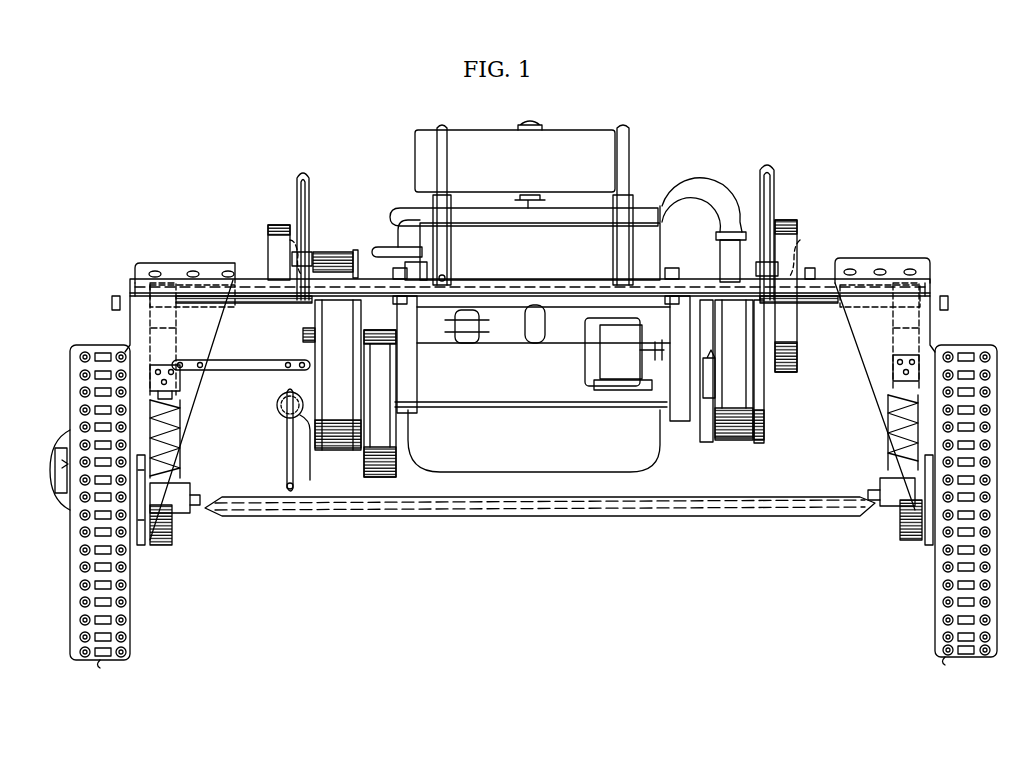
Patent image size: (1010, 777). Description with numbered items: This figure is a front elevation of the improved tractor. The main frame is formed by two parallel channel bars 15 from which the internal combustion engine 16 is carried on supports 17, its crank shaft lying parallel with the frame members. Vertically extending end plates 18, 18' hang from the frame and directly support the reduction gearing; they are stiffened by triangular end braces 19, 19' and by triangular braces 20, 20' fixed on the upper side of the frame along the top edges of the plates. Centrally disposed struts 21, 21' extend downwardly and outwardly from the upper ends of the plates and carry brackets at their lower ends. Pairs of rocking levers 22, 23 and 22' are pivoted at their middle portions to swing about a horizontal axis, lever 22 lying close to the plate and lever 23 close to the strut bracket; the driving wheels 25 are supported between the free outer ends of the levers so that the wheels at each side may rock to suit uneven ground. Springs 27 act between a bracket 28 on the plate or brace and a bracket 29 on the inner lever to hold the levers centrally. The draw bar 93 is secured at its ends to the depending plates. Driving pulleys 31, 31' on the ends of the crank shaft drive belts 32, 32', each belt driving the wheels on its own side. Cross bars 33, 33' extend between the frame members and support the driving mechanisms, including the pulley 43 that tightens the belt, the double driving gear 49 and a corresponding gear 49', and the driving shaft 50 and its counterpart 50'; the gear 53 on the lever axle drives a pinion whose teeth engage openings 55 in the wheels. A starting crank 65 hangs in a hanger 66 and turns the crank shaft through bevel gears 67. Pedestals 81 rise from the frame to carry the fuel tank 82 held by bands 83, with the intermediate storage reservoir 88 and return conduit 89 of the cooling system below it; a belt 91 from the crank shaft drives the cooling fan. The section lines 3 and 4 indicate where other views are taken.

The section line 3- 3 is at (337, 138).
The section line 4- 4 is at (360, 80).
The channel bars 15 is at (545, 280).
The internal combustion engine 16 is at (532, 388).
The supports 17 is at (420, 370).
The end plate 18 is at (173, 339).
The end plate 18' is at (892, 336).
The front end brace 19 is at (191, 410).
The rear end brace 19' is at (875, 396).
The triangular brace 20 is at (185, 270).
The triangular brace 20' is at (882, 269).
The strut 21 is at (81, 396).
The strut 21' is at (956, 317).
The lever 22 is at (159, 518).
The lever 22' is at (900, 459).
The lever 23 is at (68, 500).
The driving wheel 25 is at (72, 602).
The spring 27 is at (182, 442).
The bracket 28 is at (178, 396).
The bracket 29 is at (192, 480).
The driving pulley 31 is at (332, 388).
The driving pulley 31' is at (782, 374).
The belt 32 is at (367, 392).
The belt 32' is at (732, 387).
The cross bar 33 is at (269, 252).
The cross bar 33' is at (810, 253).
The pulley 43 is at (352, 215).
The double driving gear 49 is at (269, 236).
The gear (right) 49' is at (788, 268).
The driving shaft 50 is at (244, 316).
The shaft (right) 50' is at (799, 315).
The gear 53 is at (172, 545).
The openings 55 is at (105, 660).
The starting crank 65 is at (285, 430).
The hanger 66 is at (278, 385).
The bevel gears 67 is at (305, 452).
The pedestal 81 is at (452, 243).
The fuel tank 82 is at (560, 130).
The band 83 is at (630, 135).
The intermediate storage reservoir 88 is at (705, 200).
The conduit 89 is at (395, 245).
The belt 91 is at (705, 440).
The draw bar 93 is at (658, 517).